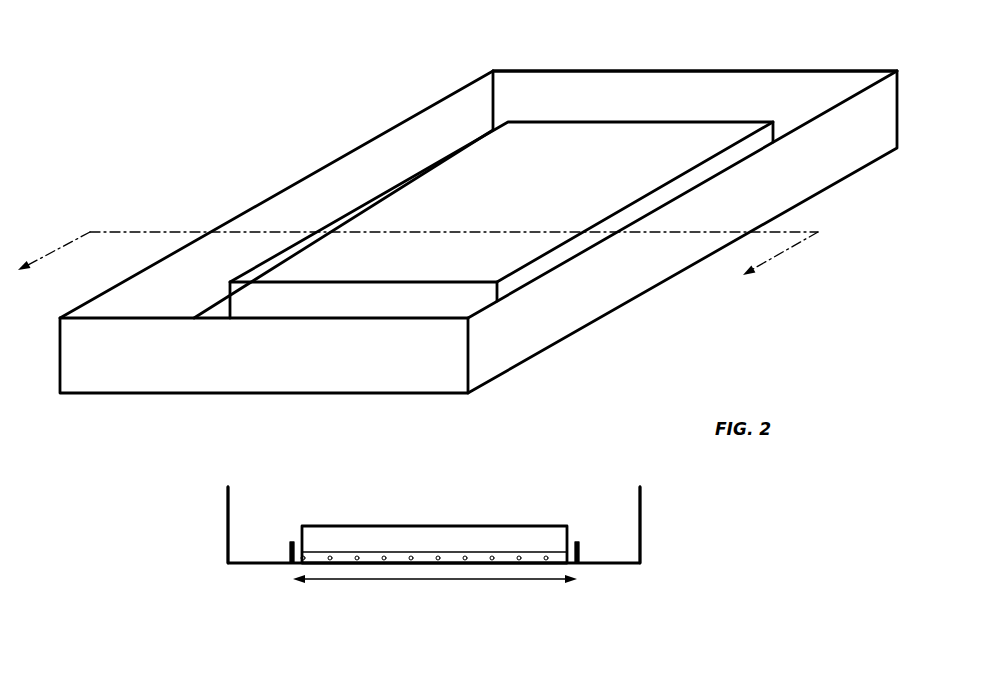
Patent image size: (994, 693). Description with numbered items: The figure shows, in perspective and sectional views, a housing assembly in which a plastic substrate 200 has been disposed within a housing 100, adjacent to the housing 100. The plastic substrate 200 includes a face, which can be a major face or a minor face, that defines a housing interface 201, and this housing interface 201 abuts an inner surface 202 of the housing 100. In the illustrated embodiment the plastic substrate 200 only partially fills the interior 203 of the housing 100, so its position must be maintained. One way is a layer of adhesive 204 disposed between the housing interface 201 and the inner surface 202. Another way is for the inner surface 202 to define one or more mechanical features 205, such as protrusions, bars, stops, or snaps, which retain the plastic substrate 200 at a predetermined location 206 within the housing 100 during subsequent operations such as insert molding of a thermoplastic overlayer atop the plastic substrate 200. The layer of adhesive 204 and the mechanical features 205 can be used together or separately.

The housing 100 is at (252, 180).
The plastic substrate 200 is at (457, 185).
The housing interface 201 is at (490, 560).
The inner surface 202 is at (278, 560).
The interior 203 is at (756, 82).
The layer of adhesive 204 is at (462, 552).
The mechanical features 205 is at (292, 540).
The predetermined location 206 is at (487, 582).